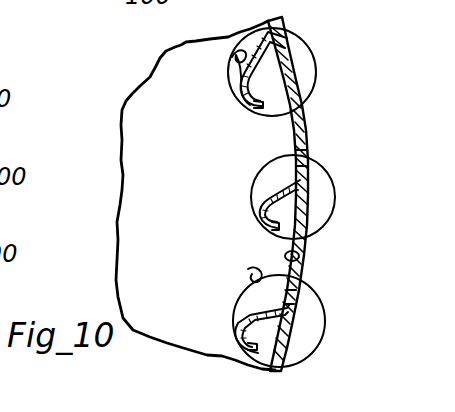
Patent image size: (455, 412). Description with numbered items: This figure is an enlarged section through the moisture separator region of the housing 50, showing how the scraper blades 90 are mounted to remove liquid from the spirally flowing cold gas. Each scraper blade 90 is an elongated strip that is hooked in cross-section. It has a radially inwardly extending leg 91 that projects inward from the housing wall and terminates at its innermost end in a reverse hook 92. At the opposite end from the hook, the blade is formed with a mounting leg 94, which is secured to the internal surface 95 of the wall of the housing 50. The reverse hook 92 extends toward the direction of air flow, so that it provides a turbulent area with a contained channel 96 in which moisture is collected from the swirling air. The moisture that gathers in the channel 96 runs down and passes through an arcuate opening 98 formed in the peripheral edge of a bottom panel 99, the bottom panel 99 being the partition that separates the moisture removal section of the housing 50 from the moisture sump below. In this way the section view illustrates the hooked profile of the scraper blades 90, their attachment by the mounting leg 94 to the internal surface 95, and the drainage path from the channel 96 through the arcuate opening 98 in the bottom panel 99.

The housing 50 is at (306, 204).
The scraper blade 90 is at (260, 80).
The radially inwardly extending leg 91 is at (287, 42).
The reverse hook 92 is at (259, 116).
The mounting leg 94 is at (308, 167).
The internal surface 95 is at (305, 262).
The channel 96 is at (268, 198).
The arcuate opening 98 is at (234, 56).
The bottom panel 99 is at (125, 277).